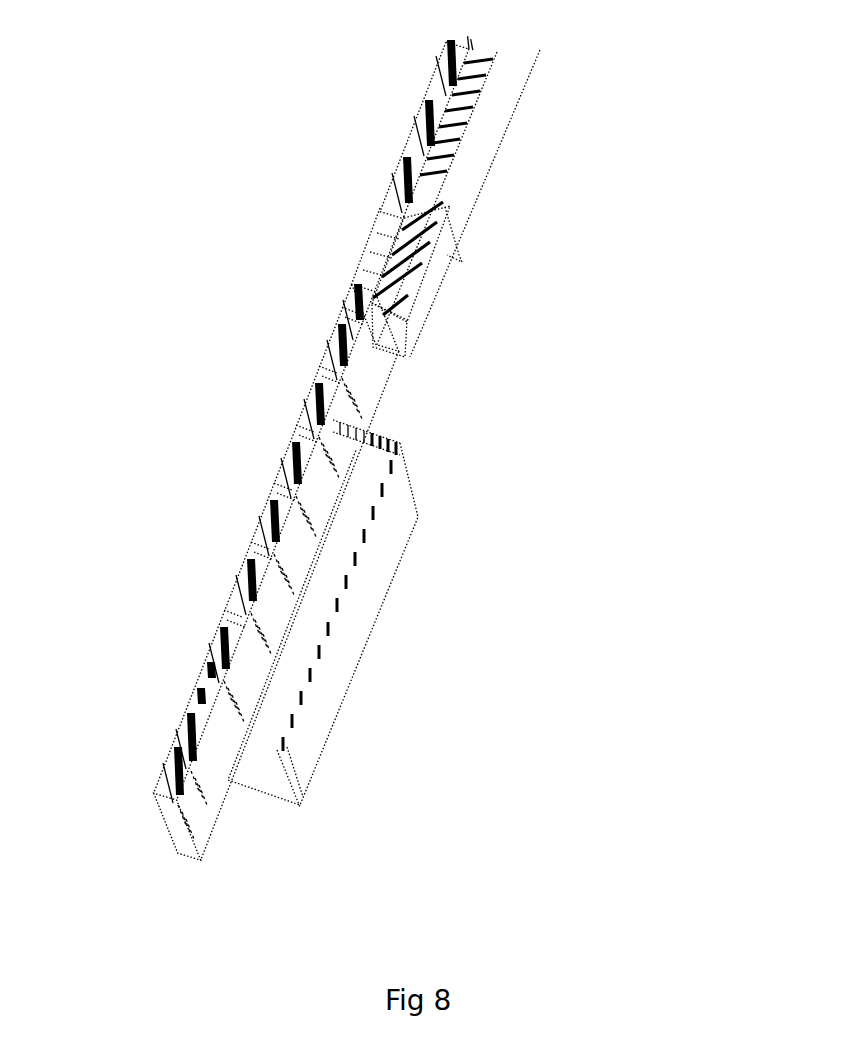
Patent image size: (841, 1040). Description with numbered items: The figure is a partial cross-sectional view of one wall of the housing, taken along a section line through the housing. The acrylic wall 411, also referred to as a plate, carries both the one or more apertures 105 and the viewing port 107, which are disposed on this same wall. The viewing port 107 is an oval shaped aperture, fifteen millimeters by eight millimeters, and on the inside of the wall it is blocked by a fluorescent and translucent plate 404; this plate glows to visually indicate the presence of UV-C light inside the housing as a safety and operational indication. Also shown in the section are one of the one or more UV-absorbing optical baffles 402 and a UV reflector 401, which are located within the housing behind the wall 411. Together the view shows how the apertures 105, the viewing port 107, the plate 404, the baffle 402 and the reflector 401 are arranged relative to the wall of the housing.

The acrylic wall 411 is at (420, 87).
The viewing port 107 is at (362, 251).
The apertures 105 is at (262, 492).
The UV reflector 401 is at (512, 151).
The fluorescent and translucent plate 404 is at (434, 313).
The UV-absorbing optical baffle 402 is at (414, 556).